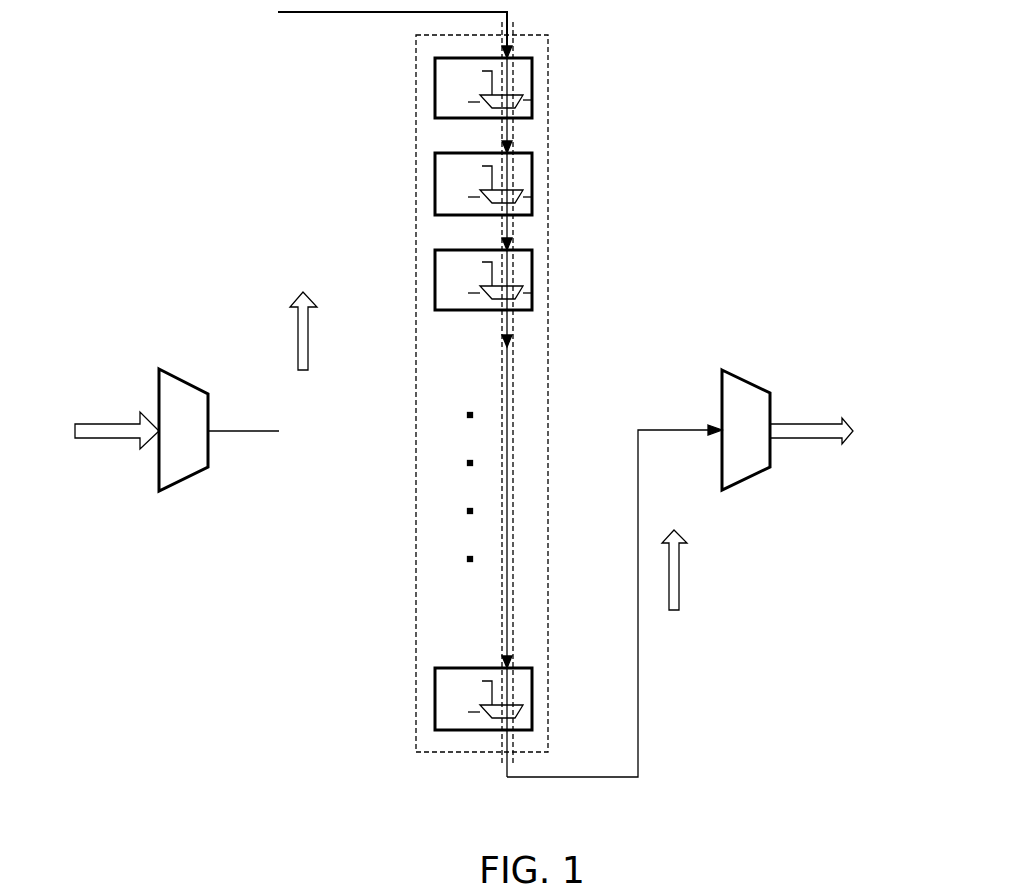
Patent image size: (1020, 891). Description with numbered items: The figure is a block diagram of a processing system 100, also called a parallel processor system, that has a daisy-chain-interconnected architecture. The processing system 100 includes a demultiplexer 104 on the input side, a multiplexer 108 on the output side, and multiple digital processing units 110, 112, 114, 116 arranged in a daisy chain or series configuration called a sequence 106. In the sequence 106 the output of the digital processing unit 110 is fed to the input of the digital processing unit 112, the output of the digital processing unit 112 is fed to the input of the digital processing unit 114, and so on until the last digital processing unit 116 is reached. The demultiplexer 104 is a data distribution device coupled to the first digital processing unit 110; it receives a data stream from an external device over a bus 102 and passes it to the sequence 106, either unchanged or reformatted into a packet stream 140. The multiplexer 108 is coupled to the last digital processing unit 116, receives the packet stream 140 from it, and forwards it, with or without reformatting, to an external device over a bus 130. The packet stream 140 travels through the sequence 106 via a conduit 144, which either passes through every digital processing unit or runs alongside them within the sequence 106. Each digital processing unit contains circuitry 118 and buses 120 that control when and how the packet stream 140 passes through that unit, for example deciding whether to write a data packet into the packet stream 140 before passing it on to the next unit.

The processing system 100 is at (838, 44).
The bus 102 is at (105, 428).
The demultiplexer 104 is at (182, 373).
The sequence 106 is at (548, 66).
The multiplexer 108 is at (747, 413).
The digital processing unit 110 is at (435, 80).
The digital processing unit 112 is at (435, 185).
The digital processing unit 114 is at (435, 275).
The digital processing unit 116 is at (532, 712).
The circuitry 118 is at (532, 99).
The buses 120 is at (513, 328).
The bus 130 is at (829, 437).
The packet stream 140 is at (308, 333).
The conduit 144 is at (500, 608).